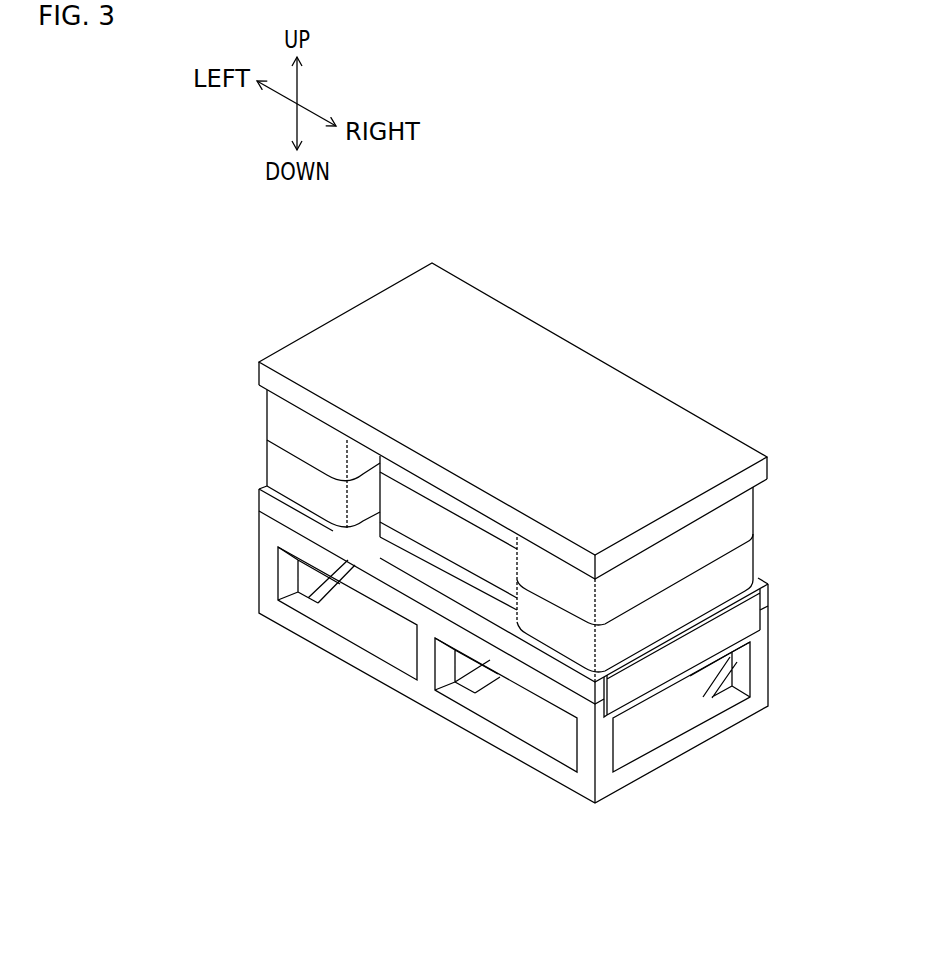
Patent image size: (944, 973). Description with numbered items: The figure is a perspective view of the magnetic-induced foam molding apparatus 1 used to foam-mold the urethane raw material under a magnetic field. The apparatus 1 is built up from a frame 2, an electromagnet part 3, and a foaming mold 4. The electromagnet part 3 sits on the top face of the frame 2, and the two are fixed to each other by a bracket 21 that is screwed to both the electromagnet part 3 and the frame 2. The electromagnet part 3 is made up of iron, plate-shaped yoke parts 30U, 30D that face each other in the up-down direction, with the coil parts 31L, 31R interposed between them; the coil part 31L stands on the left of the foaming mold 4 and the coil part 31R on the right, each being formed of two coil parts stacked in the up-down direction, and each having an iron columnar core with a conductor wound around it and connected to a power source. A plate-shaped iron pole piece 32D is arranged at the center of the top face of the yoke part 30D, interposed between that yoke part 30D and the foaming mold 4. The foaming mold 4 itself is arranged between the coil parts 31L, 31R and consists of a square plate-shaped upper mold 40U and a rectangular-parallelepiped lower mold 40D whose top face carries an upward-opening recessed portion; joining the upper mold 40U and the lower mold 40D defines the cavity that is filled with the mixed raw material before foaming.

The magnetic-induced foam molding apparatus 1 is at (677, 313).
The frame 2 is at (612, 782).
The electromagnet part 3 is at (276, 322).
The foaming mold 4 is at (460, 599).
The bracket 21 is at (753, 618).
The yoke part 30U is at (669, 437).
The yoke part 30D is at (267, 503).
The coil part 31L is at (278, 421).
The coil part 31R is at (740, 523).
The pole piece 32D is at (397, 542).
The upper mold 40U is at (480, 522).
The lower mold 40D is at (443, 547).